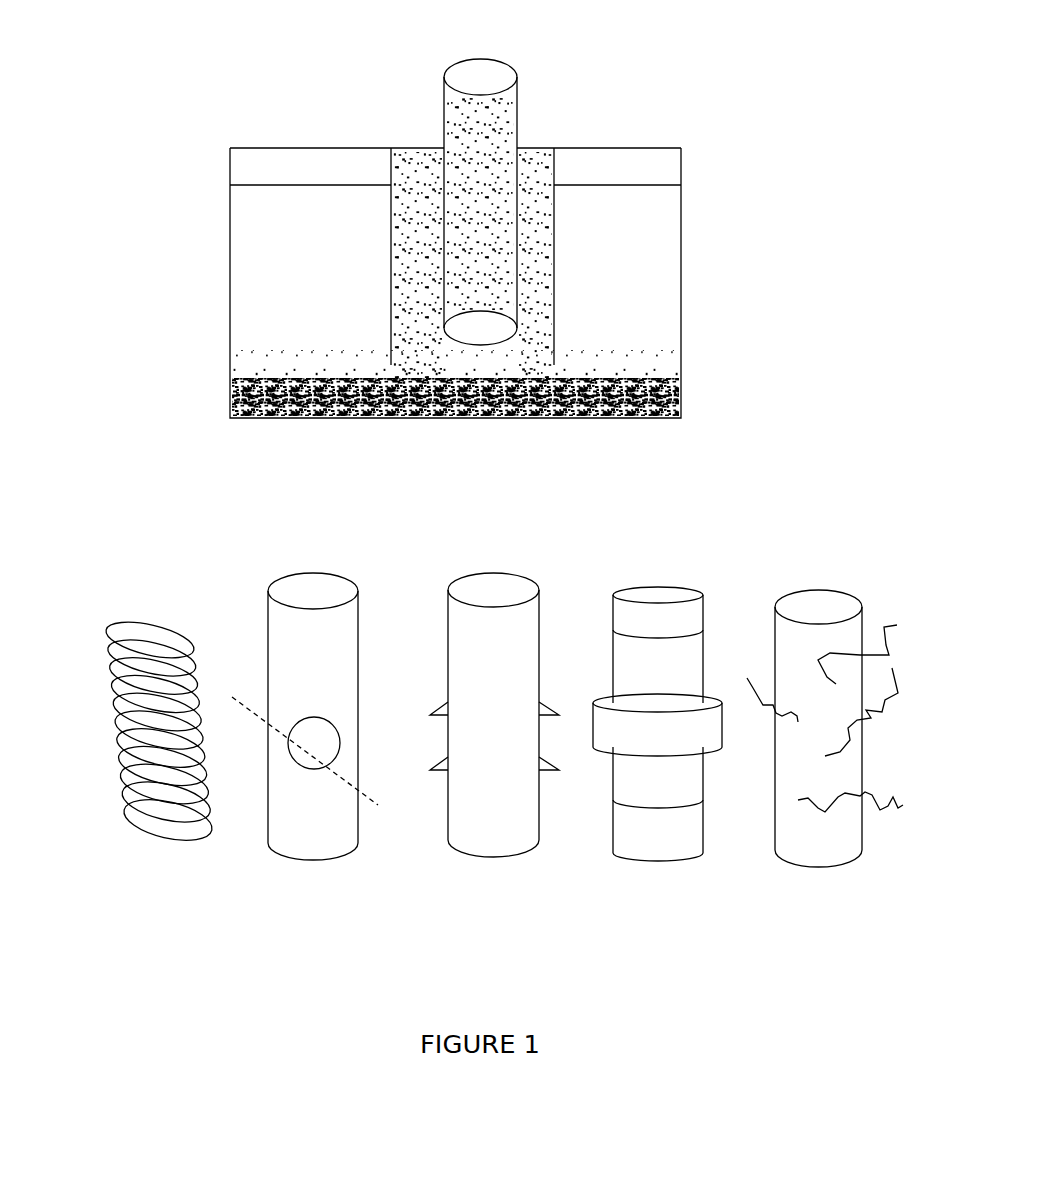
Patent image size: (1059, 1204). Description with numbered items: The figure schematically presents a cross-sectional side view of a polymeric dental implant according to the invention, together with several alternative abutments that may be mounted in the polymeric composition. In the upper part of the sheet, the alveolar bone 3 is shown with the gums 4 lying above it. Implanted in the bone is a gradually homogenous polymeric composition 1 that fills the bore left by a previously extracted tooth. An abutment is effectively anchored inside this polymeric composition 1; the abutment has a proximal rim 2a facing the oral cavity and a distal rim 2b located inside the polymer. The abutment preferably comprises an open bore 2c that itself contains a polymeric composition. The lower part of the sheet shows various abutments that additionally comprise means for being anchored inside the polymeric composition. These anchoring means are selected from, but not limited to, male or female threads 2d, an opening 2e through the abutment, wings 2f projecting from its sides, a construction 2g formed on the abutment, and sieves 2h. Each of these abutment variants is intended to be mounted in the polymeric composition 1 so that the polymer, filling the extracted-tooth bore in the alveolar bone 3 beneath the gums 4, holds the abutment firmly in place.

The polymeric composition 1 is at (428, 167).
The proximal rim 2a is at (518, 105).
The distal rim 2b is at (480, 293).
The open bore 2c is at (480, 77).
The male or female threads 2d is at (125, 808).
The opening 2e is at (307, 752).
The wings 2f is at (443, 768).
The construction 2g is at (650, 752).
The sieves 2h is at (880, 812).
The alveolar bone 3 is at (292, 352).
The gums 4 is at (247, 167).